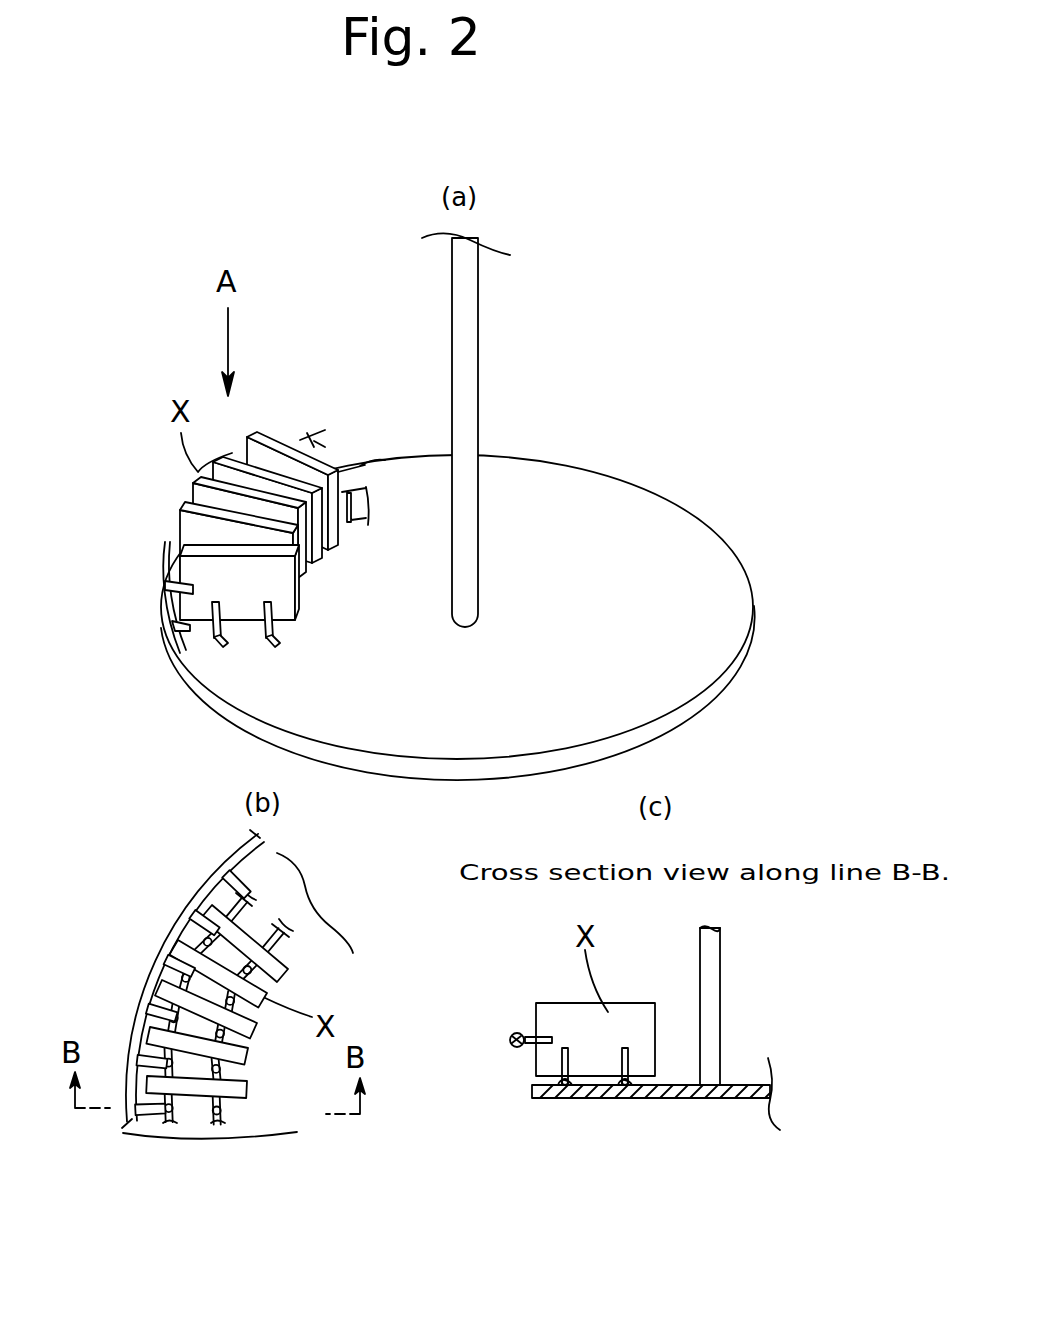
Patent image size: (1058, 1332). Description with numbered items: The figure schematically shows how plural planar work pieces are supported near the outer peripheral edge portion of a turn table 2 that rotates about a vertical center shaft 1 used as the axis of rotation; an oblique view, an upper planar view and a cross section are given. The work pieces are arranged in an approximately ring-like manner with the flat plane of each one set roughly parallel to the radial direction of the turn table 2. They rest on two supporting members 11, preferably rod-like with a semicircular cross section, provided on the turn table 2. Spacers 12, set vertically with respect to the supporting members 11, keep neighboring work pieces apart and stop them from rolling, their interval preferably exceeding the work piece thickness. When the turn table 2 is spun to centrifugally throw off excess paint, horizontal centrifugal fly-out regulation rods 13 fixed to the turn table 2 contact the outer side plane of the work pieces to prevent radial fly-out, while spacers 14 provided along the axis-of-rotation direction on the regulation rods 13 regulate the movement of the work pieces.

The center shaft 1 is at (472, 334).
The turn table 2 is at (688, 678).
The supporting members 11 is at (272, 648).
The spacers 12 is at (271, 605).
The centrifugal fly-out regulation rods 13 is at (162, 563).
The spacers 14 is at (166, 540).